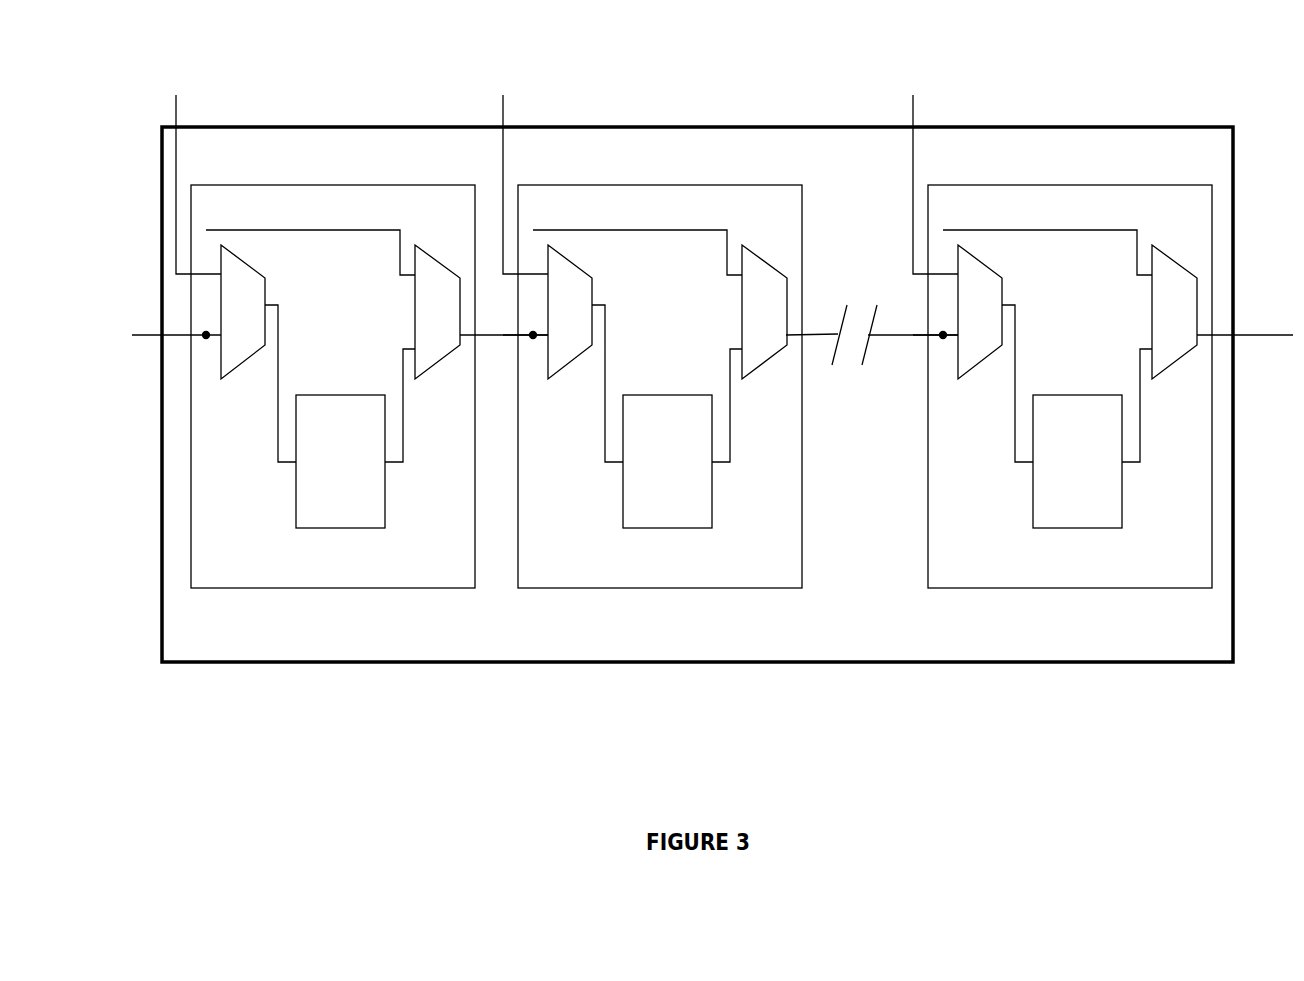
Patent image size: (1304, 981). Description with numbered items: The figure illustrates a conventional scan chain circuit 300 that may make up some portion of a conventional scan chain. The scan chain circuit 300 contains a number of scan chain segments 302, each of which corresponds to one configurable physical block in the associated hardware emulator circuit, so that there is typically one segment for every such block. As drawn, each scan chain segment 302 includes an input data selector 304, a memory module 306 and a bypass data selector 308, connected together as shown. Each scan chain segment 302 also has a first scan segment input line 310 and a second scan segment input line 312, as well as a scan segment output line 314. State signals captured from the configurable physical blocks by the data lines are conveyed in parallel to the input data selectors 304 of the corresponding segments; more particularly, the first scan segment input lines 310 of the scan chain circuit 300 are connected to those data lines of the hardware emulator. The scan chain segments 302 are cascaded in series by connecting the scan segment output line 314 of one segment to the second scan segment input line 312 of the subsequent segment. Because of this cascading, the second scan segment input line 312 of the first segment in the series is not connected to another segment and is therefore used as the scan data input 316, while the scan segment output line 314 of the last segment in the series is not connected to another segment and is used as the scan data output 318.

The scan chain circuit 300 is at (370, 80).
The scan chain segment 302 is at (347, 216).
The input data selector 304 is at (257, 306).
The memory module 306 is at (355, 471).
The bypass data selector 308 is at (452, 306).
The first scan segment input line 310 is at (176, 112).
The second scan segment input line 312 is at (176, 335).
The scan segment output line 314 is at (486, 335).
The scan data input 316 is at (147, 335).
The scan data output 318 is at (1248, 335).